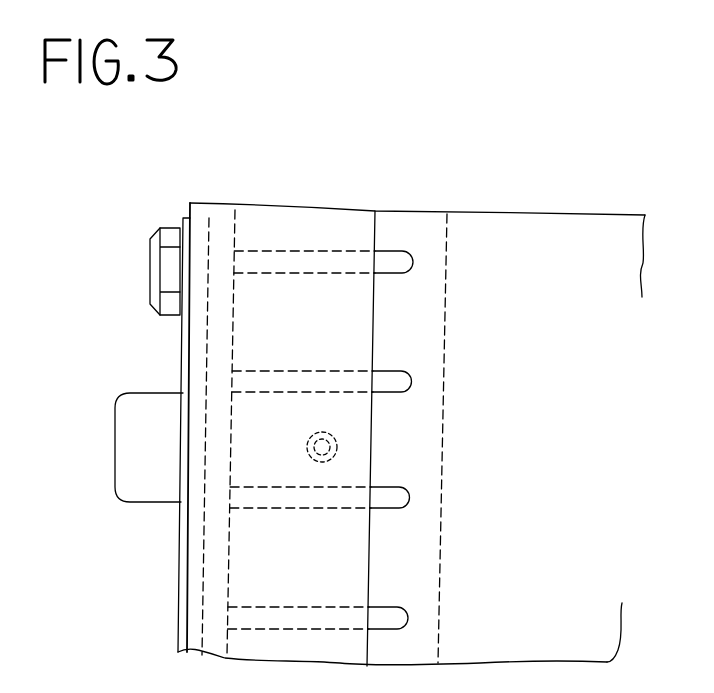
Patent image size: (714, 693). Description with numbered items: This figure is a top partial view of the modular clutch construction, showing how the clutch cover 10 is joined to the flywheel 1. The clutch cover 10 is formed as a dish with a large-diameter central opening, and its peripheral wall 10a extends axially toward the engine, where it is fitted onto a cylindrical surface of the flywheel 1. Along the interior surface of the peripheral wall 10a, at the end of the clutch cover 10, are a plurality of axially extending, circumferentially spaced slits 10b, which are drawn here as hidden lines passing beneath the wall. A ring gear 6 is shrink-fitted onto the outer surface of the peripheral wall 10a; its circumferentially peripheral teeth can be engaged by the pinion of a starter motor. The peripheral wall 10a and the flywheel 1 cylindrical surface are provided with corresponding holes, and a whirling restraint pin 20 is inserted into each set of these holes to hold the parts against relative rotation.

The flywheel 1 is at (447, 357).
The ring gear 6 is at (378, 232).
The clutch cover 10 is at (590, 232).
The peripheral wall 10a is at (427, 230).
The slits 10b is at (273, 250).
The whirling restraint pin 20 is at (338, 452).